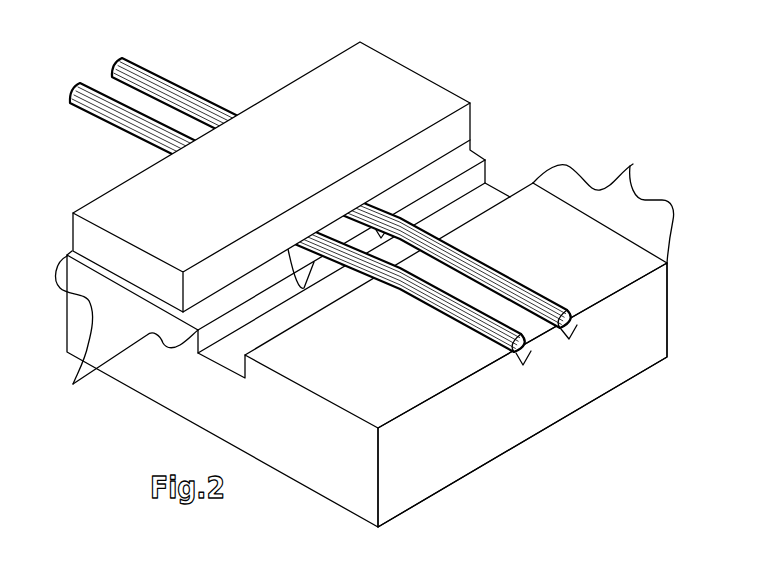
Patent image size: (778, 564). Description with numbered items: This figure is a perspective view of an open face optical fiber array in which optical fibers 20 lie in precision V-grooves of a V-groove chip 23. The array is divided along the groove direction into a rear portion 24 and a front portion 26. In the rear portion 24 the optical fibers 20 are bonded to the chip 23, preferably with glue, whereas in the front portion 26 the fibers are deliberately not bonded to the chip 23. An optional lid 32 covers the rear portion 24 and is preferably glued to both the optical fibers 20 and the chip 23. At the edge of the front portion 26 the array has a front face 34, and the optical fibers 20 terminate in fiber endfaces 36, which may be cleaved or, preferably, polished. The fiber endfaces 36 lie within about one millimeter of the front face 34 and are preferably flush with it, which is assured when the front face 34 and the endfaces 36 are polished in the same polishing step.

The optical fibers 20 is at (78, 83).
The V-groove chip 23 is at (350, 470).
The rear portion 24 is at (125, 335).
The front portion 26 is at (603, 202).
The lid 32 is at (208, 218).
The front face 34 is at (473, 450).
The fiber endfaces 36 is at (530, 357).